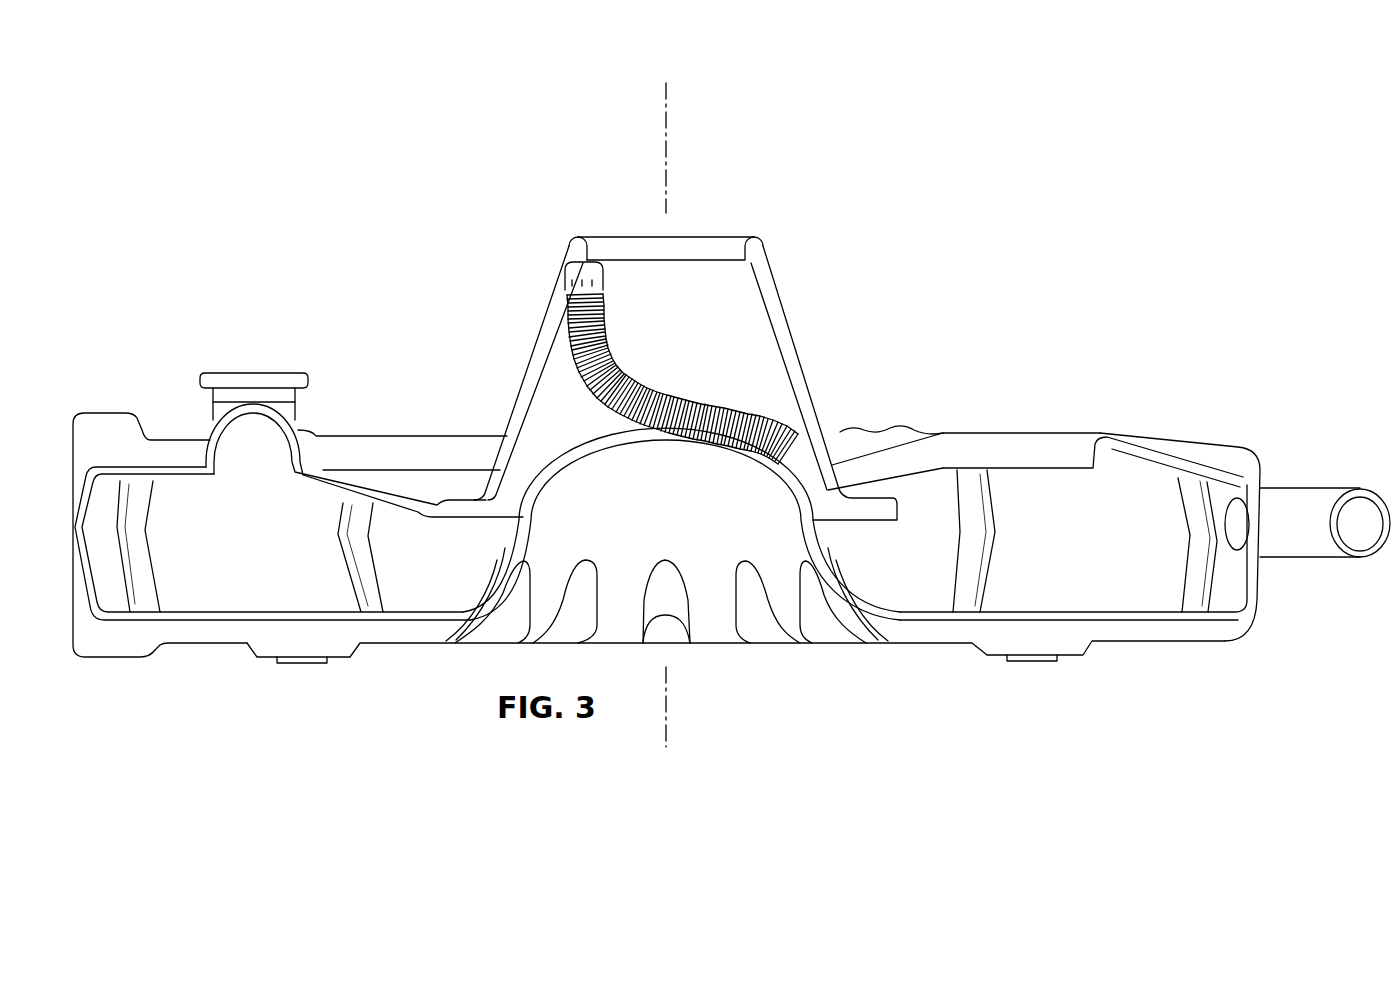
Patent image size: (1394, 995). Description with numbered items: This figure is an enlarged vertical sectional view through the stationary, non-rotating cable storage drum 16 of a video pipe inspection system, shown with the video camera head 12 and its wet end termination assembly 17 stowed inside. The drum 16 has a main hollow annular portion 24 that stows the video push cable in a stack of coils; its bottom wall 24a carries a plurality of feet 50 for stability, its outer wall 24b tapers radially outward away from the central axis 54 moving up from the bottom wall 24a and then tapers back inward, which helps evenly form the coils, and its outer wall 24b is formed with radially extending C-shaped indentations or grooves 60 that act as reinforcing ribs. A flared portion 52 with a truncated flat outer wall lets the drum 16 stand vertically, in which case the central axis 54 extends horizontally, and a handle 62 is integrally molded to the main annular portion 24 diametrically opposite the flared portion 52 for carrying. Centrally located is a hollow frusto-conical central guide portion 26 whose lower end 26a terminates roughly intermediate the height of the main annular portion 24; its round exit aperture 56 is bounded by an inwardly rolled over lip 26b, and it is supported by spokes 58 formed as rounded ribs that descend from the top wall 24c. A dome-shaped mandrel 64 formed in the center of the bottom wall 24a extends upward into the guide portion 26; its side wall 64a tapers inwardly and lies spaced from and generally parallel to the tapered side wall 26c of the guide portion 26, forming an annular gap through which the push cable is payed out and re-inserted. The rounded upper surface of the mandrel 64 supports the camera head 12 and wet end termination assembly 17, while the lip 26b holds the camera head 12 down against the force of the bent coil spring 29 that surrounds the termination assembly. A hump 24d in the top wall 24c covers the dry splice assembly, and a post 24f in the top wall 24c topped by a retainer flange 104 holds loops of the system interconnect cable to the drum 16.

The video camera head 12 is at (565, 270).
The cable storage drum 16 is at (863, 226).
The wet end termination assembly 17 is at (640, 355).
The main hollow annular portion 24 is at (731, 523).
The bottom wall 24a is at (1143, 620).
The outer wall 24b is at (1255, 590).
The top wall 24c is at (1183, 437).
The hump 24d is at (215, 420).
The post 24f is at (295, 417).
The central guide portion 26 is at (659, 348).
The lower end of central guide portion 26a is at (490, 493).
The inwardly rolled over lip 26b is at (590, 252).
The tapered side wall 26c is at (802, 347).
The coil spring 29 is at (607, 317).
The feet 50 is at (298, 663).
The flared portion 52 is at (93, 413).
The central axis 54 is at (672, 94).
The exit aperture 56 is at (718, 242).
The spokes 58 is at (903, 430).
The C-shaped indentations or grooves 60 is at (364, 558).
The handle 62 is at (1327, 488).
The dome-shaped mandrel 64 is at (696, 501).
The side wall of mandrel 64a is at (828, 535).
The retainer flange 104 is at (277, 373).